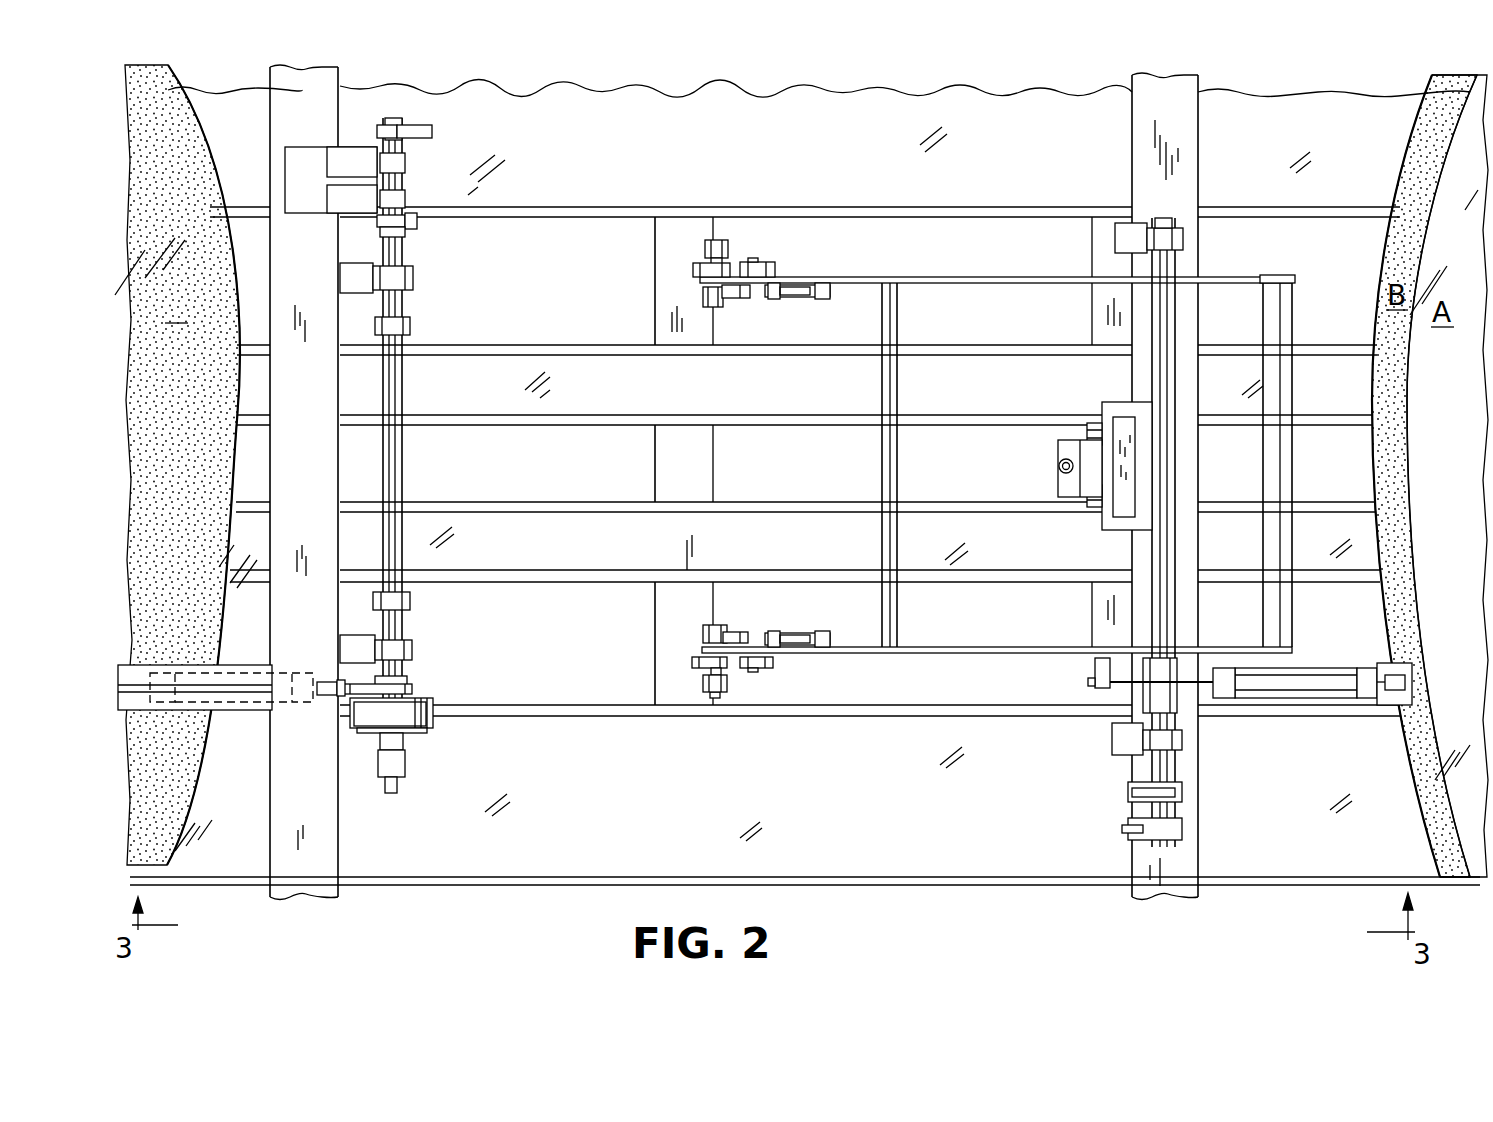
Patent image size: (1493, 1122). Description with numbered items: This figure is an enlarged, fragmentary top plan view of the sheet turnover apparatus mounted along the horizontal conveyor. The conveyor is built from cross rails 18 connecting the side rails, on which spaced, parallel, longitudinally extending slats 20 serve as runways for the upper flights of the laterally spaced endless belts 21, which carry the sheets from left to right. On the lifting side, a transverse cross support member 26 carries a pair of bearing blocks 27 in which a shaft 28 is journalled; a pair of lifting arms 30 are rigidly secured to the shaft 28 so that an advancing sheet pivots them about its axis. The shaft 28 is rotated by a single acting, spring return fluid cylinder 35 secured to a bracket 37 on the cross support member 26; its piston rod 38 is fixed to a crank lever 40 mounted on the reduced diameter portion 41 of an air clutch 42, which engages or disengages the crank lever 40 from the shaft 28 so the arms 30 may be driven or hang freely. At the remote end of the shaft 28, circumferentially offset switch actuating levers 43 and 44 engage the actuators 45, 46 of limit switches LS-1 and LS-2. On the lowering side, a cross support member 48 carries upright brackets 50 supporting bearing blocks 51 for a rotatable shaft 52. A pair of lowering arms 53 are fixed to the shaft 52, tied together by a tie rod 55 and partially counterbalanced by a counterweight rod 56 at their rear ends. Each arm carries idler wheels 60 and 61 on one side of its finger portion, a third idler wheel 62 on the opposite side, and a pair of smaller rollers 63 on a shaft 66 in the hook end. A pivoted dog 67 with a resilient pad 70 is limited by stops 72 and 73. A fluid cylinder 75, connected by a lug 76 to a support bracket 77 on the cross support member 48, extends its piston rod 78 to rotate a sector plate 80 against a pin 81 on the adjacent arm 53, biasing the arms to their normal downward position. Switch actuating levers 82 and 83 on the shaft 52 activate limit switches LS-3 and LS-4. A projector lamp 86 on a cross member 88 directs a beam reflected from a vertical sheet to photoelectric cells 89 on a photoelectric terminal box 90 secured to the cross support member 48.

The cross rails 18 is at (663, 458).
The slats 20 is at (557, 212).
The endless belts 21 is at (624, 167).
The cross support member 26 is at (278, 455).
The bearing blocks 27 is at (413, 278).
The shaft 28 is at (400, 440).
The lifting arms 30 is at (410, 326).
The fluid cylinder 35 is at (183, 712).
The bracket 37 is at (150, 665).
The piston rod 38 is at (310, 705).
The crank lever 40 is at (412, 688).
The reduced diameter portion 41 is at (408, 678).
The air clutch 42 is at (430, 715).
The switch actuating lever 43 is at (425, 130).
The switch actuating lever 44 is at (415, 222).
The actuator 45 is at (392, 130).
The actuator 46 is at (402, 240).
The cross support member 48 is at (1145, 140).
The brackets 50 is at (1118, 238).
The bearing blocks 51 is at (1182, 240).
The shaft 52 is at (1165, 328).
The lowering arms 53 is at (940, 278).
The tie rod 55 is at (887, 447).
The counterweight rod 56 is at (1288, 300).
The idler wheel 60 is at (765, 263).
The idler wheel 61 is at (693, 270).
The idler wheel 62 is at (745, 298).
The rollers 63 is at (703, 248).
The shaft 66 is at (718, 240).
The dog 67 is at (798, 287).
The pad 70 is at (770, 298).
The stop 72 is at (820, 300).
The stop 73 is at (775, 300).
The fluid cylinder 75 is at (1330, 668).
The lug 76 is at (1395, 675).
The support bracket 77 is at (1302, 668).
The piston rod 78 is at (1180, 672).
The sector plate 80 is at (1100, 688).
The pin 81 is at (1095, 668).
The switch actuating lever 82 is at (1132, 792).
The switch actuating lever 83 is at (1122, 829).
The projector lamp 86 is at (1062, 470).
The cross member 88 is at (1093, 300).
The photoelectric cells 89 is at (1093, 423).
The photoelectric terminal box 90 is at (1125, 515).
The limit switch LS-1 is at (337, 160).
The limit switch LS-2 is at (337, 205).
The limit switch LS-3 is at (1182, 790).
The limit switch LS-4 is at (1182, 828).